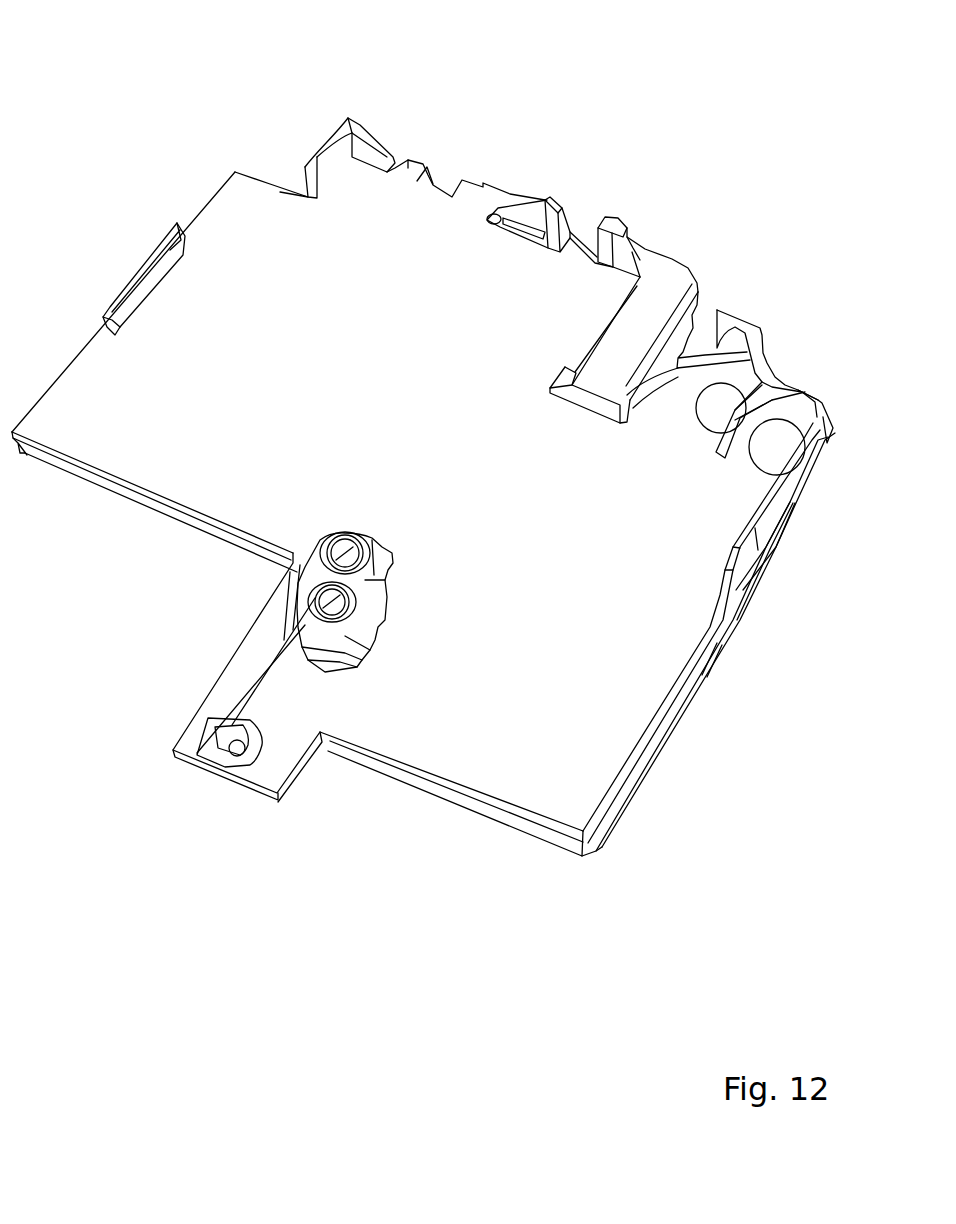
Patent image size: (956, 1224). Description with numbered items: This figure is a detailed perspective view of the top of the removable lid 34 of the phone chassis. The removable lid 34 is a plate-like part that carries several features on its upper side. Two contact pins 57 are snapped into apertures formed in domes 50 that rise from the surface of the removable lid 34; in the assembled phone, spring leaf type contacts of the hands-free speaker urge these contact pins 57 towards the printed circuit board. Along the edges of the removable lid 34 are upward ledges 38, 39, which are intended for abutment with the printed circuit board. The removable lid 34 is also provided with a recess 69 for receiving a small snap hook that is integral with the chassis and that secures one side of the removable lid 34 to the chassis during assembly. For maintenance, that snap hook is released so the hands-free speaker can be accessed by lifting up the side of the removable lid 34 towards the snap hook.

The removable lid 34 is at (404, 428).
The upward ledge 38 is at (360, 125).
The upward ledge 39 is at (143, 260).
The recess 69 is at (435, 183).
The dome 50 is at (313, 635).
The contact pin 57 is at (297, 590).